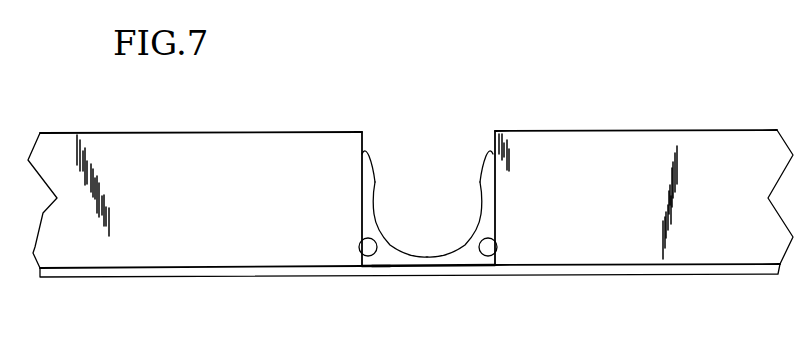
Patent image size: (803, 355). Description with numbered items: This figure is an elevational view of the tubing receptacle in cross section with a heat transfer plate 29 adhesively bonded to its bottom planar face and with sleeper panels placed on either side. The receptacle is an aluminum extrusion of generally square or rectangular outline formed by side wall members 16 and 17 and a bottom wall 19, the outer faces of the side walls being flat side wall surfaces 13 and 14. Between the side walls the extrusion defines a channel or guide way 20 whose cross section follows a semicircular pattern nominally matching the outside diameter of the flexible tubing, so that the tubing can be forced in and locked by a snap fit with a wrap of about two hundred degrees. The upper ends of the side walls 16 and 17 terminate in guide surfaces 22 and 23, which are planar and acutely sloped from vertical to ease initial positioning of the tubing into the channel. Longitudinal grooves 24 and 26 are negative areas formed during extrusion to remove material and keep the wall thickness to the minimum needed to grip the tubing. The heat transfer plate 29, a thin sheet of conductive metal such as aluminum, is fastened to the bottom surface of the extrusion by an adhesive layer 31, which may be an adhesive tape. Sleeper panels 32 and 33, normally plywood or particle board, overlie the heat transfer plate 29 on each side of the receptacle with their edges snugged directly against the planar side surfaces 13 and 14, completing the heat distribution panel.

The flat side wall surface 13 is at (494, 208).
The flat side wall surface 14 is at (362, 176).
The side wall member 16 is at (494, 188).
The side wall member 17 is at (367, 211).
The bottom wall 19 is at (450, 262).
The channel or guide way 20 is at (428, 220).
The guide surface 22 is at (486, 165).
The guide surface 23 is at (371, 163).
The longitudinal groove 24 is at (490, 247).
The longitudinal groove 26 is at (367, 247).
The heat transfer plate 29 is at (506, 274).
The adhesive layer 31 is at (380, 267).
The sleeper panel 32 is at (668, 113).
The sleeper panel 33 is at (232, 131).